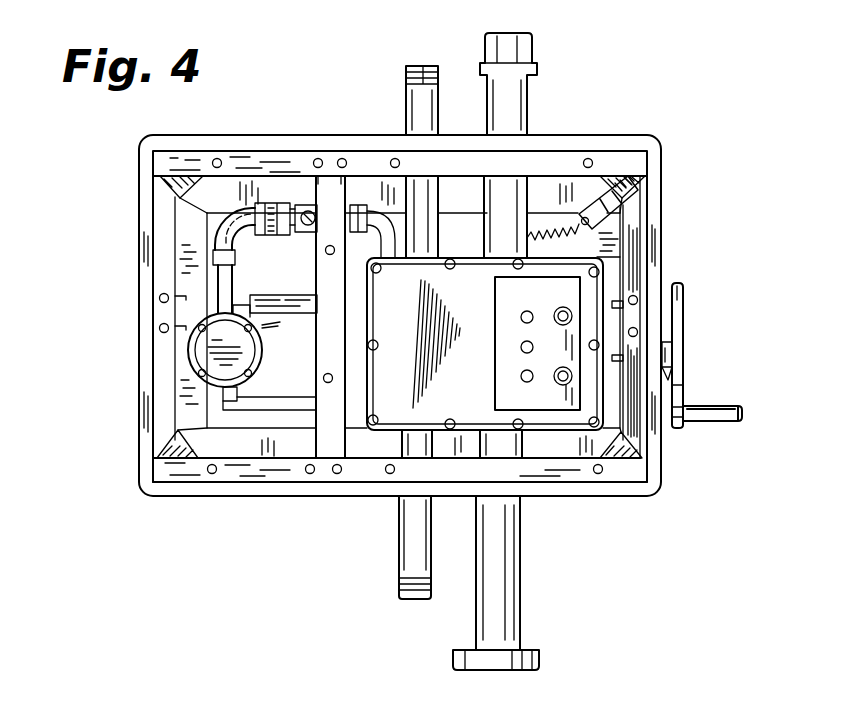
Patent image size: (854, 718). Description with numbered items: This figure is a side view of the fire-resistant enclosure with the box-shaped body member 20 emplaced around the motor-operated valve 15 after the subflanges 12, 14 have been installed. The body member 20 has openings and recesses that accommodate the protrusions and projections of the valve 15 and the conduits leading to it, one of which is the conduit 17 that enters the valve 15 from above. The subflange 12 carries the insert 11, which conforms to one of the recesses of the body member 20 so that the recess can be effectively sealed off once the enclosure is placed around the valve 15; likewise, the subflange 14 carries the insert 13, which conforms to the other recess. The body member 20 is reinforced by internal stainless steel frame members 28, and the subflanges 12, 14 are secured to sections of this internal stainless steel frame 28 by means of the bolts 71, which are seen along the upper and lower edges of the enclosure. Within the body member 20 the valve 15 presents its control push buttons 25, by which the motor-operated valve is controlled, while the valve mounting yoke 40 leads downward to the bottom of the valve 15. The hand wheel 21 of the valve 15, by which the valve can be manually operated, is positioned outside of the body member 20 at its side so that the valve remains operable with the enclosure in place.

The insert 11 is at (540, 143).
The subflange 12 is at (570, 163).
The insert 13 is at (531, 498).
The subflange 14 is at (398, 552).
The motor-operated valve 15 is at (337, 474).
The conduit 17 is at (405, 97).
The body member 20 is at (532, 313).
The hand wheel 21 is at (675, 347).
The control push buttons 25 is at (533, 347).
The internal stainless frame members 28 is at (360, 183).
The valve mounting yoke 40 is at (480, 613).
The bolts 71 is at (317, 158).